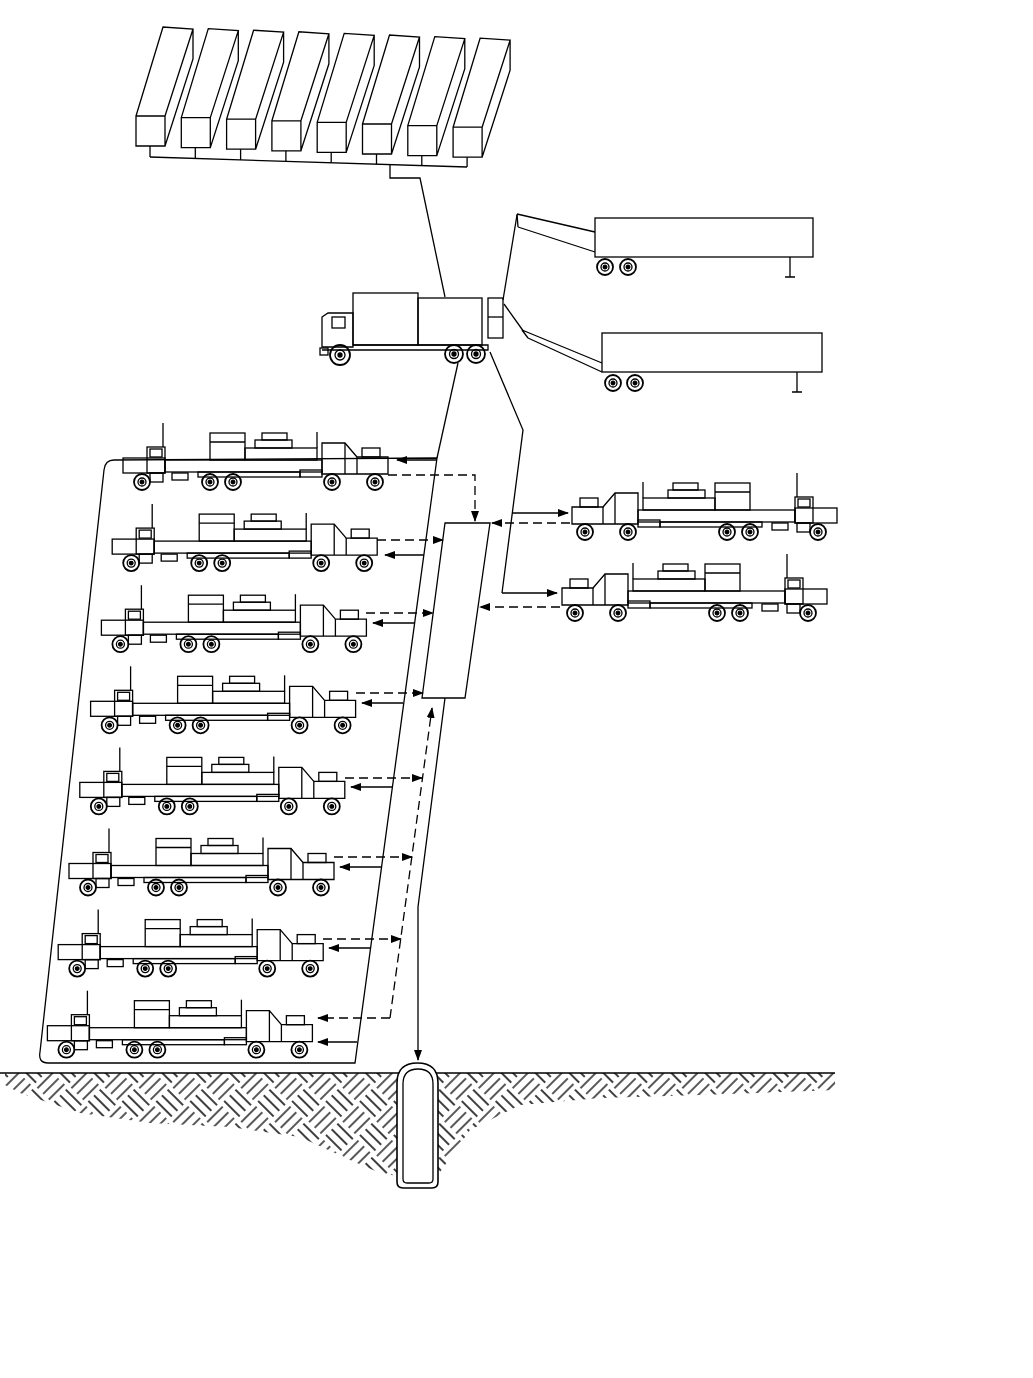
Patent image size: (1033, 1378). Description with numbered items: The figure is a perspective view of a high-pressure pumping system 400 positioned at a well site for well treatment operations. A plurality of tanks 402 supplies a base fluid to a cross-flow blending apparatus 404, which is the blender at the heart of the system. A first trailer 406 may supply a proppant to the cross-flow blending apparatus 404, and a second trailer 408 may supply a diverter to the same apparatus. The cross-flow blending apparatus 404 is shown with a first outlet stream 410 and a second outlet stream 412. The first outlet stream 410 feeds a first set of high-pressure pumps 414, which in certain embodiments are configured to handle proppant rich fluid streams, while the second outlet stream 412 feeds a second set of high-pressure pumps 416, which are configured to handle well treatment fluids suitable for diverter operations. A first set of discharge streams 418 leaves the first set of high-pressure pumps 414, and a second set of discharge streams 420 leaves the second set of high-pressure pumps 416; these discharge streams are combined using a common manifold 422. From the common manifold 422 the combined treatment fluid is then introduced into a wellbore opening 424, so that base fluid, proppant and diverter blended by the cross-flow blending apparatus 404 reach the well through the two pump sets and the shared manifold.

The high-pressure pumping system 400 is at (740, 88).
The tanks 402 is at (160, 68).
The cross-flow blending apparatus 404 is at (466, 297).
The first trailer 406 is at (730, 218).
The second trailer 408 is at (663, 335).
The first outlet stream 410 is at (435, 457).
The second outlet stream 412 is at (518, 485).
The first set of high-pressure pumps 414 is at (75, 757).
The second set of high-pressure pumps 416 is at (840, 625).
The first set of discharge streams 418 is at (400, 537).
The second set of discharge streams 420 is at (538, 608).
The common manifold 422 is at (470, 683).
The wellbore opening 424 is at (415, 1152).